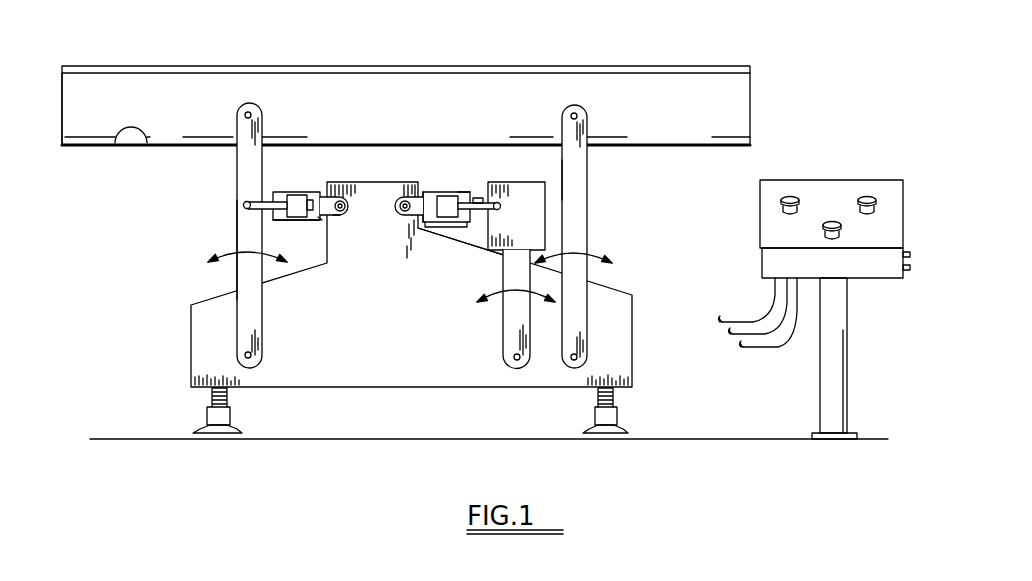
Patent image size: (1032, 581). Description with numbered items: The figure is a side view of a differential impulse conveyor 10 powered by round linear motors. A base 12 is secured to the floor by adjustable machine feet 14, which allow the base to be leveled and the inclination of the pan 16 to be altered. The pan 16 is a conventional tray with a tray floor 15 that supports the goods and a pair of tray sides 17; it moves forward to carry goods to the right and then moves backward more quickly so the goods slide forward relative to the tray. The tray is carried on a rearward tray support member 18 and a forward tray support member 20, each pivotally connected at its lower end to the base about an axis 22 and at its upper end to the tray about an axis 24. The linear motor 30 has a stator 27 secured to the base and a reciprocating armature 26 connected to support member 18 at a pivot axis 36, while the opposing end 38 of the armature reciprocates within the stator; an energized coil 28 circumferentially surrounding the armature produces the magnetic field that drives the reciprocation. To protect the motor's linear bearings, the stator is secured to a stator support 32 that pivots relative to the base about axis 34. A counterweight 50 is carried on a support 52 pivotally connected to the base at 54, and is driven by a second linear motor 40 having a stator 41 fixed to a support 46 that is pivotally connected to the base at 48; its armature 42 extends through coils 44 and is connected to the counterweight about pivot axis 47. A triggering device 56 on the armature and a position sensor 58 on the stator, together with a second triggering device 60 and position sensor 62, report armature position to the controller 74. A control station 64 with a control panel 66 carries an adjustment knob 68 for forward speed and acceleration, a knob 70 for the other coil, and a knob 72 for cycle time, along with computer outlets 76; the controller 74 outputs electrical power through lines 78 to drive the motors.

The differential impulse conveyor 10 is at (176, 256).
The base 12 is at (340, 376).
The machine feet 14 is at (203, 418).
The tray floor 15 is at (115, 143).
The pan 16 is at (700, 118).
The tray sides 17 is at (140, 118).
The rearward tray support member 18 is at (243, 306).
The forward tray support member 20 is at (577, 203).
The pivot axis 22 is at (245, 353).
The pivot axis 24 is at (247, 112).
The armature 26 is at (270, 200).
The stator 27 is at (277, 217).
The coil 28 is at (326, 190).
The linear motor 30 is at (306, 185).
The stator support 32 is at (341, 213).
The pivot axis 34 is at (334, 217).
The pivot axis 36 is at (243, 203).
The opposing end of armature 38 is at (321, 218).
The linear motor 40 is at (457, 170).
The stator 41 is at (455, 228).
The armature 42 is at (463, 192).
The coils 44 is at (425, 192).
The support 46 is at (412, 198).
The pivot axis 47 is at (535, 185).
The pivot connection 48 is at (402, 213).
The counterweight 50 is at (547, 230).
The support 52 is at (515, 310).
The pivot connection 54 is at (507, 362).
The triggering device 56 is at (480, 186).
The position sensor 58 is at (478, 196).
The triggering device 60 is at (447, 228).
The position sensor 62 is at (433, 227).
The control station 64 is at (823, 196).
The control panel 66 is at (893, 215).
The control adjustment knob 68 is at (788, 197).
The adjustment knob 70 is at (863, 197).
The control knob 72 is at (822, 232).
The controller 74 is at (863, 278).
The computer outlets 76 is at (909, 280).
The lines 78 is at (770, 348).